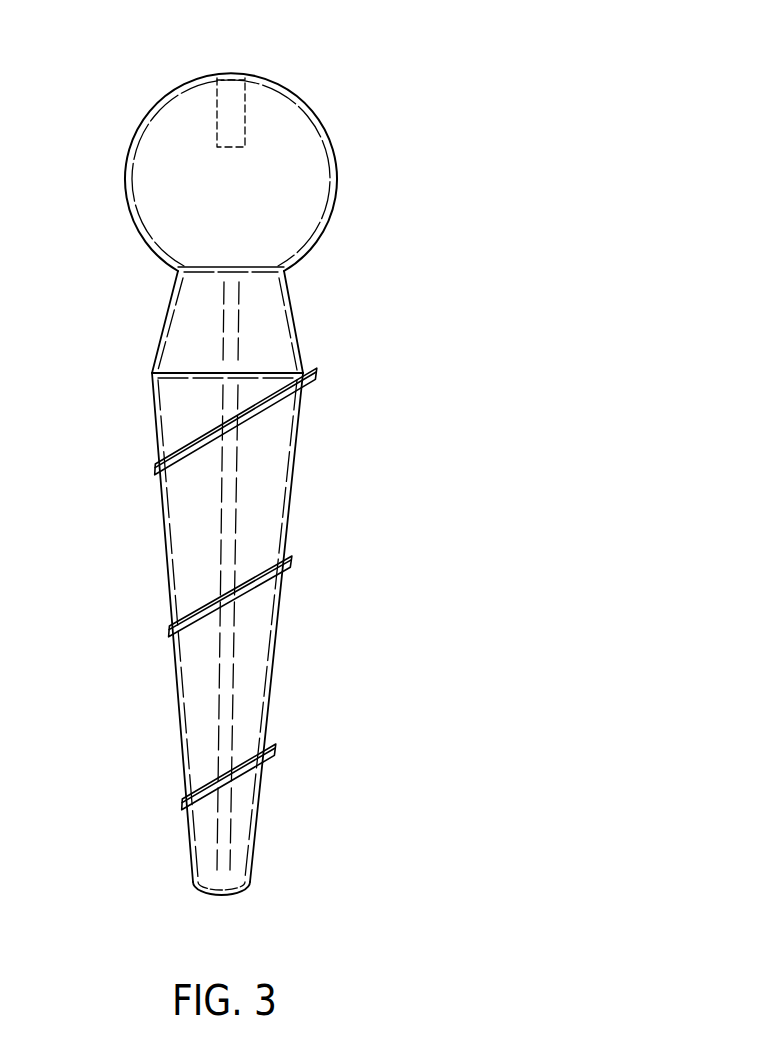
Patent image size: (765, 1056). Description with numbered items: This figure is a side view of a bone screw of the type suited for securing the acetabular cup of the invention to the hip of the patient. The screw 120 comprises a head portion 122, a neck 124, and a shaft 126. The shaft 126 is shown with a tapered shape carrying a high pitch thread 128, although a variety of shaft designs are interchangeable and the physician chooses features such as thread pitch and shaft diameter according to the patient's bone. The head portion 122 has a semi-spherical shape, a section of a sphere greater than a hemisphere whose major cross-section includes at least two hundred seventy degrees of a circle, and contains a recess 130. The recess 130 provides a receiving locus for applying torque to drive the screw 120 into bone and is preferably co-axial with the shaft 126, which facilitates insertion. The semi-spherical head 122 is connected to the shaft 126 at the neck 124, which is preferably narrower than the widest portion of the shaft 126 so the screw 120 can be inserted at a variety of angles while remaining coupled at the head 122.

The screw 120 is at (348, 137).
The head portion 122 is at (257, 207).
The neck 124 is at (297, 316).
The shaft 126 is at (290, 545).
The high pitch thread 128 is at (153, 468).
The recess 130 is at (240, 77).